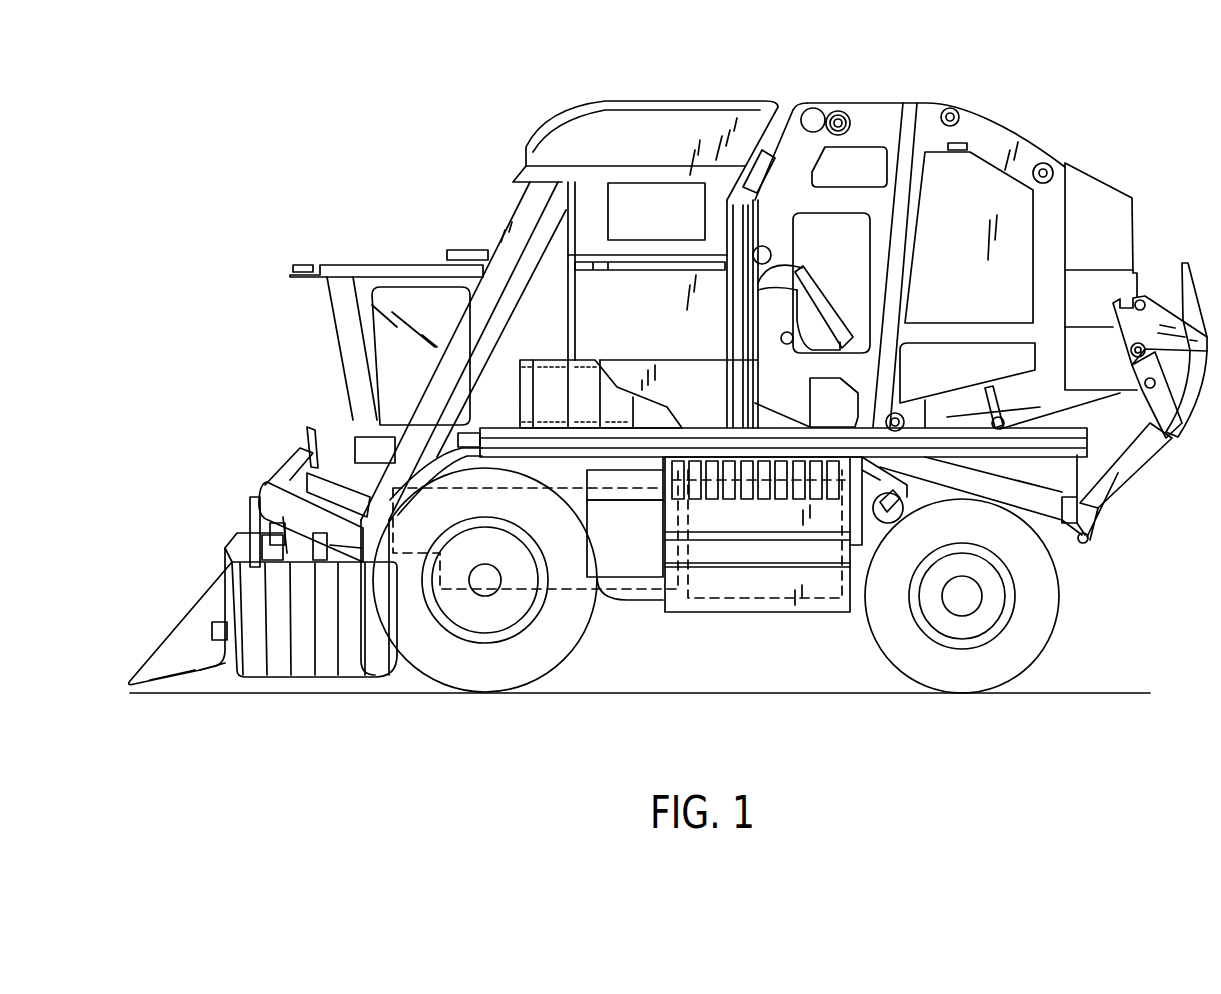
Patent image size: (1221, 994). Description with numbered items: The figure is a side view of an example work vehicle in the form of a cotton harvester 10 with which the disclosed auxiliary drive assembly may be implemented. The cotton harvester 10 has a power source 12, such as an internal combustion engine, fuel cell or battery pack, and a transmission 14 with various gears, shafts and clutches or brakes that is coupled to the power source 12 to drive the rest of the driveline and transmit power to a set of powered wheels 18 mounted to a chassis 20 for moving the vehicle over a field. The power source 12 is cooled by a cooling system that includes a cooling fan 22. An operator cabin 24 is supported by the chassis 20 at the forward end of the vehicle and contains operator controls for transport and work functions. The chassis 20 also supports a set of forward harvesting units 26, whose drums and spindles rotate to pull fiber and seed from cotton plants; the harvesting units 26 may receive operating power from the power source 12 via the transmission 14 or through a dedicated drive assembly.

The cotton harvester 10 is at (563, 89).
The power source 12 is at (768, 600).
The transmission 14 is at (627, 593).
The powered wheels 18 is at (507, 612).
The chassis 20 is at (561, 471).
The cooling fan 22 is at (757, 534).
The operator cabin 24 is at (397, 254).
The harvesting units 26 is at (222, 540).